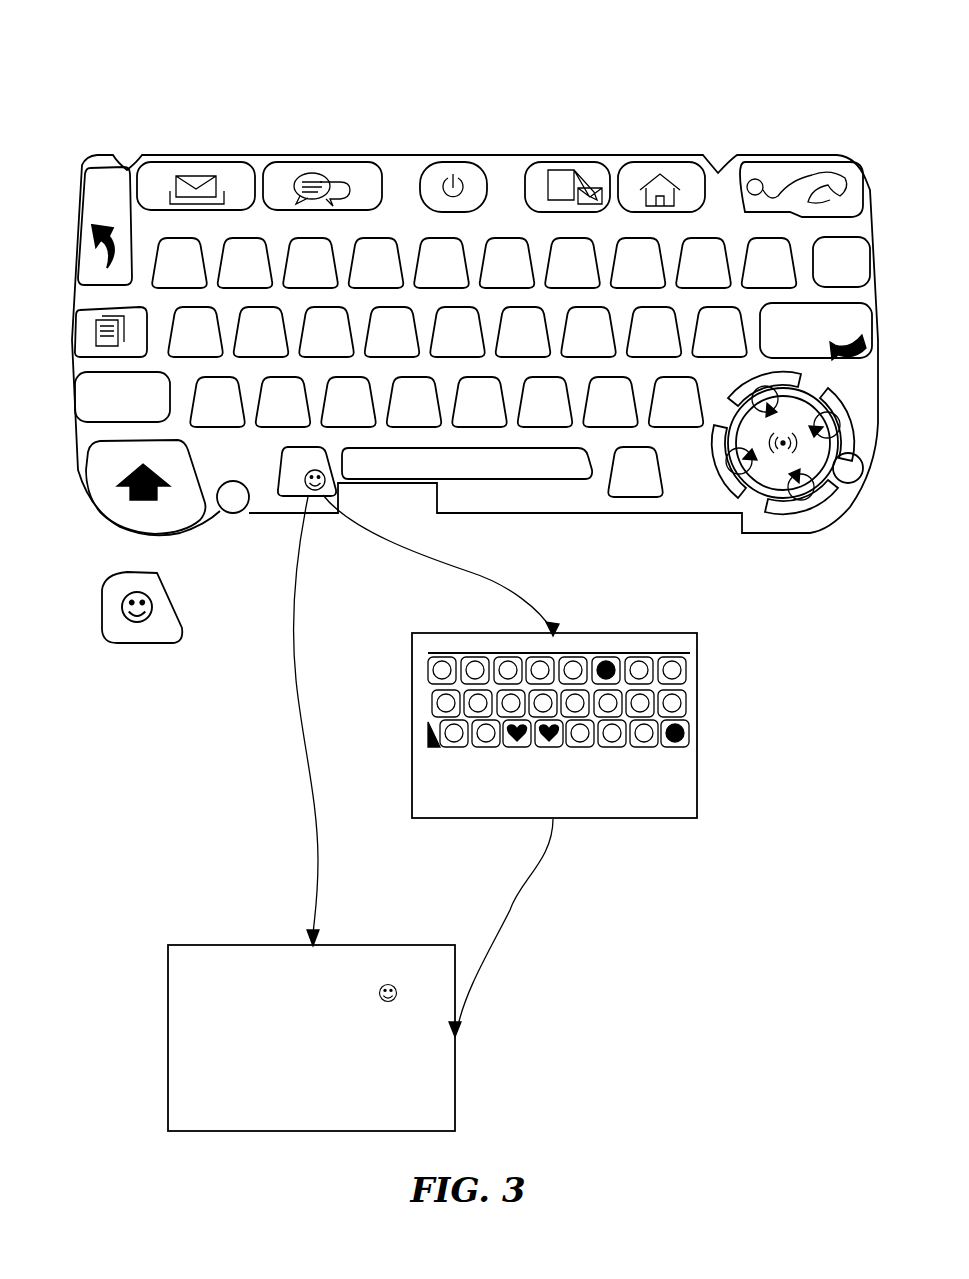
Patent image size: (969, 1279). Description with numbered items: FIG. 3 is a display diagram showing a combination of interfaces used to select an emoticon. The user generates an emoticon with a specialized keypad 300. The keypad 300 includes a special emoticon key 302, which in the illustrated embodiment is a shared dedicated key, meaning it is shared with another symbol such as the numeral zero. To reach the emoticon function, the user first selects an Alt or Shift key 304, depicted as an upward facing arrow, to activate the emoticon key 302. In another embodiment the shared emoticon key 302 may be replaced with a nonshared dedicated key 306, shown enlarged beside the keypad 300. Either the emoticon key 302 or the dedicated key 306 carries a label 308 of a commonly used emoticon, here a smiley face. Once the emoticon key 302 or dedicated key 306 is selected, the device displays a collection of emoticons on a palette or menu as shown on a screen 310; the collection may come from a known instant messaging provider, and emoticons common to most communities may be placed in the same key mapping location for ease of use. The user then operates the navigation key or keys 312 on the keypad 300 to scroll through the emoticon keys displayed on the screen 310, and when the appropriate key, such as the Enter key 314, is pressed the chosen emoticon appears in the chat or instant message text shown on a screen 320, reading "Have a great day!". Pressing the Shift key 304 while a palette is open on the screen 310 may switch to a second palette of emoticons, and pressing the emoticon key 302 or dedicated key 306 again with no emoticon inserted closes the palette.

The keypad 300 is at (808, 104).
The emoticon key 302 is at (311, 497).
The Shift key 304 is at (187, 522).
The dedicated key 306 is at (132, 643).
The label 308 is at (148, 620).
The screen 310 is at (698, 728).
The navigation key 312 is at (847, 457).
The Enter key 314 is at (858, 364).
The screen 320 is at (168, 1042).